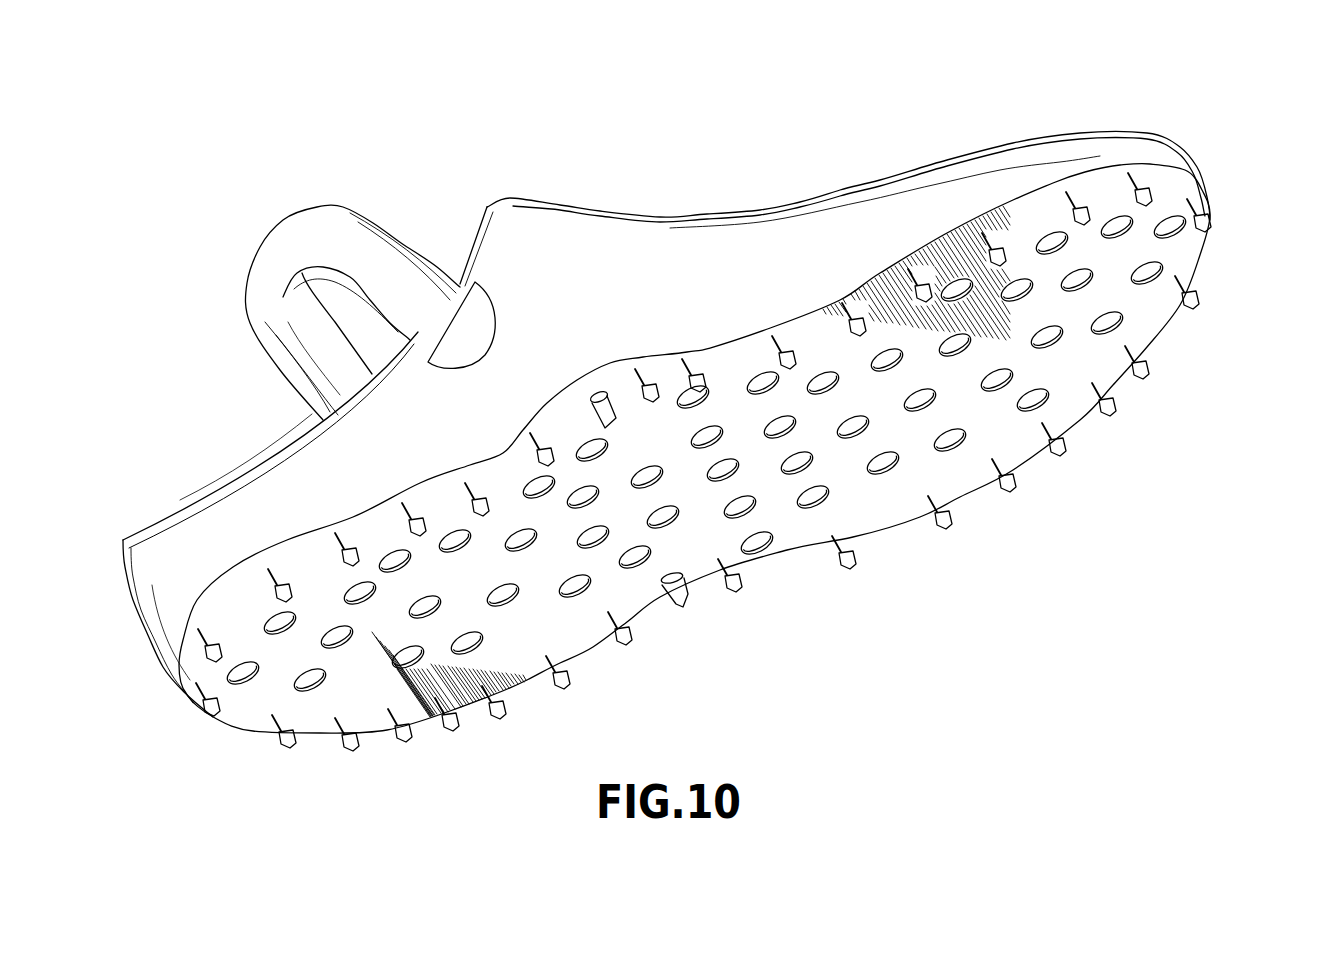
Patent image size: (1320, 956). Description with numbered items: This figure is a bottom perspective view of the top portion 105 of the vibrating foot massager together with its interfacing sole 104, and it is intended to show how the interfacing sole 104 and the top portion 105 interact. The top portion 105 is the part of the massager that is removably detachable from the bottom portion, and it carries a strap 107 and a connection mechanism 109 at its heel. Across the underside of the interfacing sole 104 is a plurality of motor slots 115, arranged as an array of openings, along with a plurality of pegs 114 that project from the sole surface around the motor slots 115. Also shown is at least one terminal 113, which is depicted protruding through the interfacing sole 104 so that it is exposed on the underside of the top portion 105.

The interfacing sole 104 is at (1207, 194).
The top portion 105 is at (1127, 120).
The strap 107 is at (368, 207).
The connection mechanism 109 is at (461, 284).
The at least one terminal 113 is at (672, 610).
The plurality of pegs 114 is at (1141, 383).
The plurality of motor slots 115 is at (853, 436).